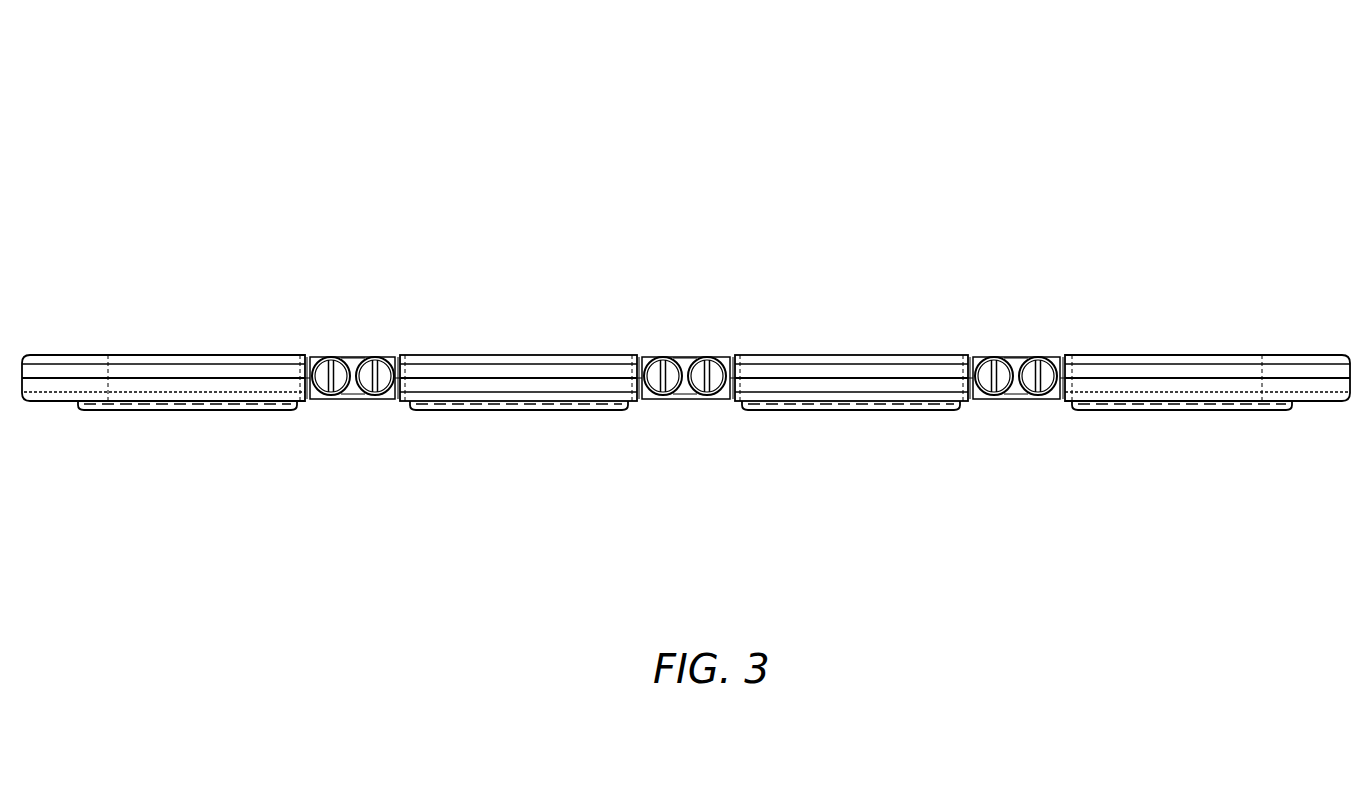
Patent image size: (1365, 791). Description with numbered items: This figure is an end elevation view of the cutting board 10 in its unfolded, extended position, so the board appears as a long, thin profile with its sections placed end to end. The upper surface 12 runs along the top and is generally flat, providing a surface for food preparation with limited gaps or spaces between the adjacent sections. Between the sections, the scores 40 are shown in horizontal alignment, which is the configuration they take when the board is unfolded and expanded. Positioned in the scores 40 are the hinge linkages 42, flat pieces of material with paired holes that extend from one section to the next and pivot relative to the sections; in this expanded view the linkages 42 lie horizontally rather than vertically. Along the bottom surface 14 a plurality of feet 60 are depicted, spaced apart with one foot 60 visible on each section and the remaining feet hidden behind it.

The cutting board 10 is at (965, 68).
The upper surface 12 is at (878, 318).
The bottom surface 14 is at (784, 462).
The scores 40 is at (390, 335).
The hinge linkages 42 is at (353, 397).
The feet 60 is at (183, 411).